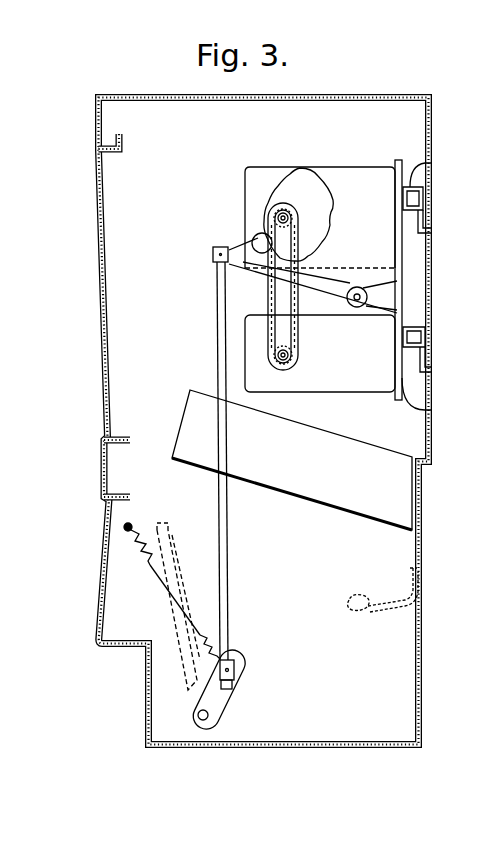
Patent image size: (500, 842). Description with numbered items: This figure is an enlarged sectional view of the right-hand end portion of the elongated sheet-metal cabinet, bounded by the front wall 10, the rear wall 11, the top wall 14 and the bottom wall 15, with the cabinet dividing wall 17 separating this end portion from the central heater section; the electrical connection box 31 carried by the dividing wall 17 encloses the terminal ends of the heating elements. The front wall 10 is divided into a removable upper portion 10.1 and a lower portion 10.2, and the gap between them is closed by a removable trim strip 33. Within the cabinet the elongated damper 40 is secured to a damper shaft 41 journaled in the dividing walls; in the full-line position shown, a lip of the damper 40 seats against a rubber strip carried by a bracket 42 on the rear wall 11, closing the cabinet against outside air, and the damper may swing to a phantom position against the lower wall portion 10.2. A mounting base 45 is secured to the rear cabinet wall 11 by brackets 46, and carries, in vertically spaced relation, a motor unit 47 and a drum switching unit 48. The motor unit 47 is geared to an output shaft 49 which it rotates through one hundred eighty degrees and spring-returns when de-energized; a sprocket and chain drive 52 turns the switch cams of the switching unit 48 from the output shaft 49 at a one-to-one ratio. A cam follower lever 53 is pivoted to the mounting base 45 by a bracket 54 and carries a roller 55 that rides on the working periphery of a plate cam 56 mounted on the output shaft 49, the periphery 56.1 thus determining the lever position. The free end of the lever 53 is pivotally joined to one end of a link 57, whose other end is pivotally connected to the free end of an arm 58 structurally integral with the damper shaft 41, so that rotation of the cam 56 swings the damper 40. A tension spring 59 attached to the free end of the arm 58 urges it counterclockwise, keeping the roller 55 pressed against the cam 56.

The front wall 10 is at (96, 190).
The upper portion of front wall 10.1 is at (97, 229).
The lower portion of front wall 10.2 is at (97, 575).
The rear wall 11 is at (433, 273).
The top wall 14 is at (353, 92).
The bottom wall 15 is at (316, 751).
The cabinet dividing wall 17 is at (417, 122).
The electrical connection box 31 is at (340, 490).
The trim strip 33 is at (100, 477).
The damper 40 is at (163, 523).
The damper shaft 41 is at (202, 720).
The bracket 42 is at (384, 608).
The mounting base 45 is at (402, 248).
The brackets 46 is at (431, 162).
The motor unit 47 is at (355, 164).
The drum switching unit 48 is at (344, 394).
The output shaft 49 is at (273, 210).
The sprocket and chain drive 52 is at (300, 339).
The cam follower lever 53 is at (333, 273).
The bracket 54 is at (383, 300).
The roller 55 is at (256, 238).
The plate cam 56 is at (301, 165).
The cam surface 56.1 is at (318, 187).
The link 57 is at (218, 318).
The arm 58 is at (214, 712).
The tension spring 59 is at (134, 563).